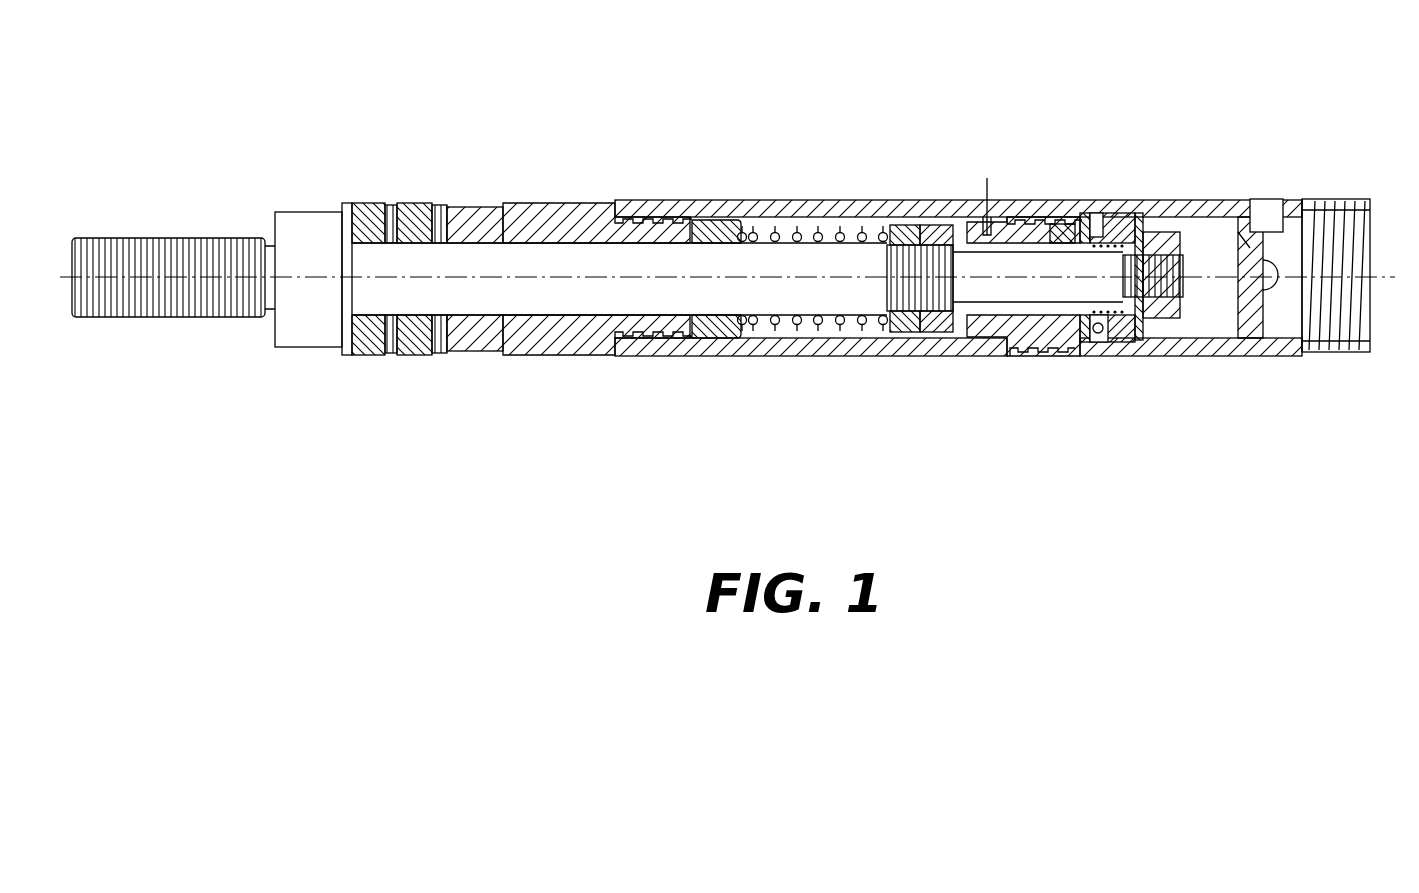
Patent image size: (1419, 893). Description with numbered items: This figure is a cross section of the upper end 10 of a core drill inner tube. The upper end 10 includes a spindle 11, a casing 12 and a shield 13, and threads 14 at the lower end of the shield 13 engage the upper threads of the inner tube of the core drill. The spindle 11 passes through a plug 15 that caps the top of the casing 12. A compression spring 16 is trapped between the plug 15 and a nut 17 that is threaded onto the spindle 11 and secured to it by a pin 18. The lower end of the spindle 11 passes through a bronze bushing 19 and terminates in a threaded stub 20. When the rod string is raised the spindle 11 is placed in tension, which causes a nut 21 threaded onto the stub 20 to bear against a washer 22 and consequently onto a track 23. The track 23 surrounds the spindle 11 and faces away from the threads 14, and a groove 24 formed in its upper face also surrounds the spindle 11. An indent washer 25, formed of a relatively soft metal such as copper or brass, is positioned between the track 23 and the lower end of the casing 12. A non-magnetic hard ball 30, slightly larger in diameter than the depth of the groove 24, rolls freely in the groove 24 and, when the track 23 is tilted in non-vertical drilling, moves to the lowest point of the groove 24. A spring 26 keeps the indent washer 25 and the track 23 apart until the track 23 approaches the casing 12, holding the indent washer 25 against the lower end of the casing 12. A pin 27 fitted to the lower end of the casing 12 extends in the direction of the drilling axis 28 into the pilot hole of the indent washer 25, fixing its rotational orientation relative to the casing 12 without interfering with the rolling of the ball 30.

The upper end 10 is at (842, 98).
The spindle 11 is at (528, 258).
The casing 12 is at (726, 208).
The shield 13 is at (1143, 212).
The threads 14 is at (1355, 235).
The plug 15 is at (568, 340).
The compression spring 16 is at (800, 322).
The nut 17 is at (896, 333).
The pin 18 is at (931, 334).
The bronze bushing 19 is at (1000, 316).
The threaded stub 20 is at (1183, 287).
The nut 21 is at (1176, 318).
The washer 22 is at (1148, 224).
The track 23 is at (1113, 343).
The groove 24 is at (1098, 222).
The indent washer 25 is at (1062, 226).
The spring 26 is at (1127, 343).
The pin 27 is at (1037, 217).
The drilling axis 28 is at (318, 278).
The ball 30 is at (1100, 340).